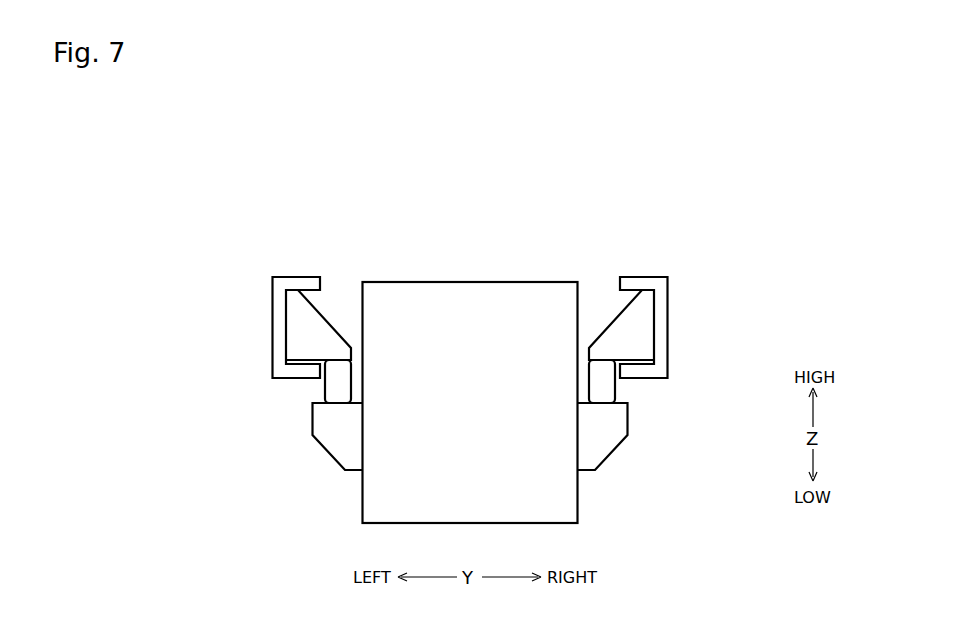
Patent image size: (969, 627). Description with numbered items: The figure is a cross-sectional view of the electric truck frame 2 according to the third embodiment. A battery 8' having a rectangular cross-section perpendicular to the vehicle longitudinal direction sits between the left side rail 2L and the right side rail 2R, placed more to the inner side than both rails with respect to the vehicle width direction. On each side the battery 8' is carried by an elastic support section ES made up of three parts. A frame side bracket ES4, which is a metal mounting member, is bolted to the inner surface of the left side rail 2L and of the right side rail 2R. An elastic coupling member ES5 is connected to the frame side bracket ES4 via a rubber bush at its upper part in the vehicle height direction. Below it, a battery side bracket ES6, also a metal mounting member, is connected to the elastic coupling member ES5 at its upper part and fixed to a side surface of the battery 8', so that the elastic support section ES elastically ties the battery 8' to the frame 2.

The electric truck frame 2 is at (243, 214).
The left side rail 2L is at (295, 277).
The right side rail 2R is at (645, 277).
The battery 8' is at (470, 373).
The frame side bracket ES4 is at (295, 344).
The elastic coupling member ES5 is at (333, 389).
The battery side bracket ES6 is at (327, 433).
The elastic support section ES is at (210, 335).